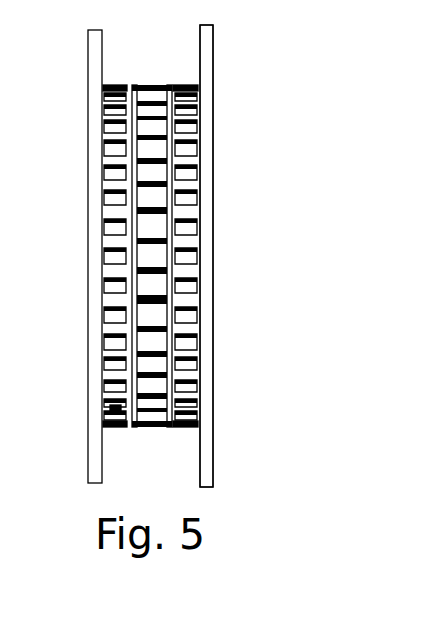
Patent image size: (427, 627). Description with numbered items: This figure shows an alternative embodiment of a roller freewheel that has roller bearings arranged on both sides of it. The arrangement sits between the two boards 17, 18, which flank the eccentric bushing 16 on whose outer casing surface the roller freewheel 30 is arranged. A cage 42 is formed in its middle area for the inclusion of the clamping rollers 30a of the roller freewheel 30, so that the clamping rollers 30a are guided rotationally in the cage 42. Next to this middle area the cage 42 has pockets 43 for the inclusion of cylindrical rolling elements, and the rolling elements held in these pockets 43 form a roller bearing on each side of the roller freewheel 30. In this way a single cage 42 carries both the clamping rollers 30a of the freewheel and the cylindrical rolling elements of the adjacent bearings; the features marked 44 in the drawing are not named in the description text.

The eccentric bushing 16 is at (221, 93).
The board 17 is at (96, 321).
The board 18 is at (205, 295).
The roller freewheel 30 is at (110, 409).
The clamping rollers 30a is at (152, 170).
The cage 42 is at (189, 158).
The pockets 43 is at (197, 197).
The cells 44 is at (190, 313).